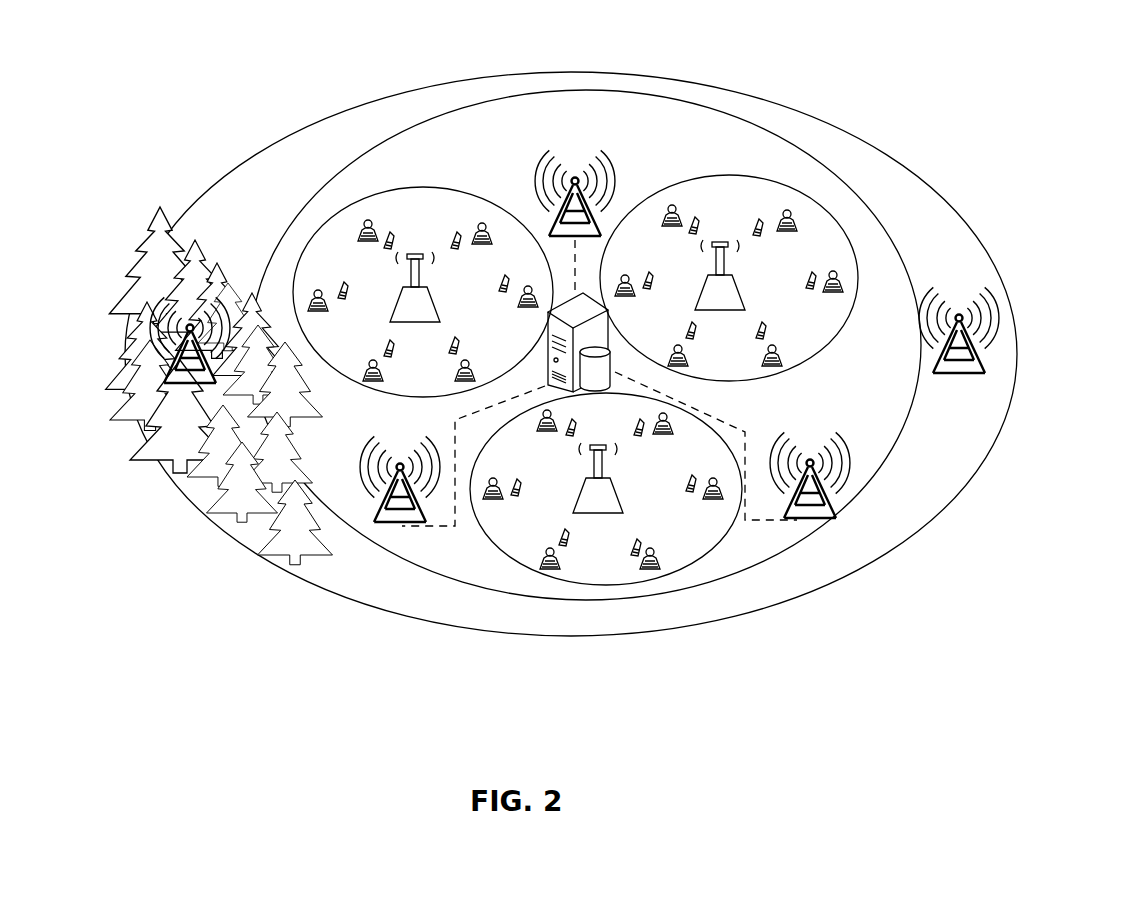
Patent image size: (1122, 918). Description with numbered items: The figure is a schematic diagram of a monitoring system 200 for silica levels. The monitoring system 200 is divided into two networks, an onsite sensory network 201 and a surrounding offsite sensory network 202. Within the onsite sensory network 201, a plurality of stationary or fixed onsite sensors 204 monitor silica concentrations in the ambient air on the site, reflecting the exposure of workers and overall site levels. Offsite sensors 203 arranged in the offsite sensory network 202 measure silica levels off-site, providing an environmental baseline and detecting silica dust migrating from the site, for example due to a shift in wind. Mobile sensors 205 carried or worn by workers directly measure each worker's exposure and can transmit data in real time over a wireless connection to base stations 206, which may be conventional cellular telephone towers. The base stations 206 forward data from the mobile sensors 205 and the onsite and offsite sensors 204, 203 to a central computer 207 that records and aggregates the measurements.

The monitoring system 200 is at (580, 370).
The onsite sensory network 201 is at (688, 145).
The offsite sensory network 202 is at (325, 133).
The offsite sensor 203 is at (155, 318).
The onsite sensor 204 is at (390, 527).
The mobile sensor 205 is at (788, 204).
The base station 206 is at (742, 291).
The central computer 207 is at (571, 292).